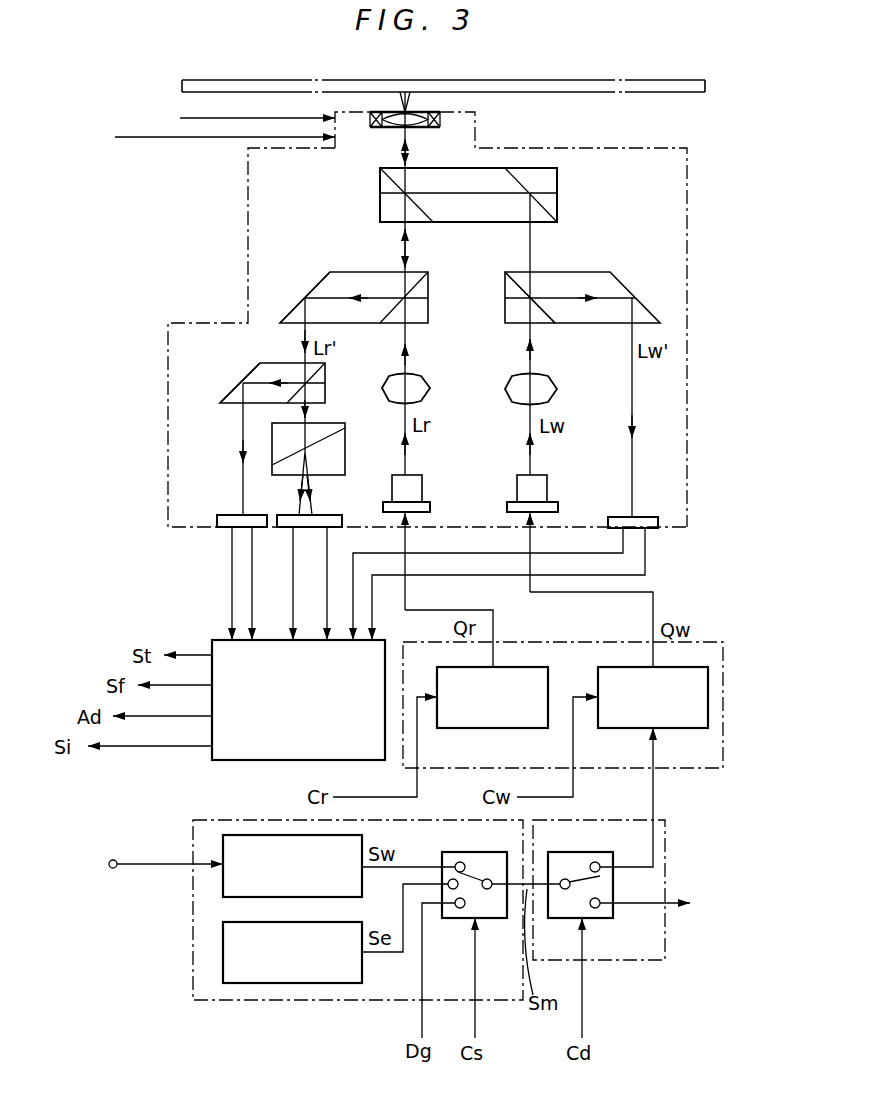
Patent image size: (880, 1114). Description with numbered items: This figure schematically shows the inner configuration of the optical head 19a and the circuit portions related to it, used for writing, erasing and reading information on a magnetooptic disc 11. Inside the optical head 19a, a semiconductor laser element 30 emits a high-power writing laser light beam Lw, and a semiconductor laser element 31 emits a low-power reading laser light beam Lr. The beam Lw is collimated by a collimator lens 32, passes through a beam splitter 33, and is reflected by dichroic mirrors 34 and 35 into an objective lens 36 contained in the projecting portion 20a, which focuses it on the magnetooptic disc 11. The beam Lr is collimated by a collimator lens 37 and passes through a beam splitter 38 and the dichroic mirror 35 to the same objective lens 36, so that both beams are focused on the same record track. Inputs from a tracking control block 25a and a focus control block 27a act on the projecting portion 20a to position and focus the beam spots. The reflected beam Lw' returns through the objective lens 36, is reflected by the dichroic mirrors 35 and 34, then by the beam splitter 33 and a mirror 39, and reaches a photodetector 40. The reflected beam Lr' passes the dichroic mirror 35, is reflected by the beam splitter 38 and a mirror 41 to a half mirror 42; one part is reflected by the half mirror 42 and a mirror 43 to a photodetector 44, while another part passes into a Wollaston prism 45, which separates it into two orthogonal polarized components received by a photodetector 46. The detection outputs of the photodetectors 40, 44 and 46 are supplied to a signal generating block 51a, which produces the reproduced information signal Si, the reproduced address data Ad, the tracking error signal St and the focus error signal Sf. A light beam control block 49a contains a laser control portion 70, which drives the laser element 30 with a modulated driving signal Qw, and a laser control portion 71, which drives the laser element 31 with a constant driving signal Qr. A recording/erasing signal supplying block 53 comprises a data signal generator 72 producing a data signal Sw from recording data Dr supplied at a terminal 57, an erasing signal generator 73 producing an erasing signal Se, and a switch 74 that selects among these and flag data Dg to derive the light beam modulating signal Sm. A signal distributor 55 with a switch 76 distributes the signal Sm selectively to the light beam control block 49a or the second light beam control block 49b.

The magnetooptic disc 11 is at (220, 80).
The focus control block 27a is at (226, 117).
The tracking control block 25a is at (196, 140).
The projecting portion 20a is at (476, 120).
The optical head 19a is at (165, 358).
The objective lens 36 is at (380, 128).
The dichroic mirror 34 is at (548, 203).
The dichroic mirror 35 is at (397, 190).
The beam splitter 38 is at (427, 287).
The mirror 41 is at (330, 275).
The mirror 39 is at (618, 283).
The beam splitter 33 is at (522, 292).
The half mirror 42 is at (322, 387).
The mirror 43 is at (255, 365).
The collimator lens 37 is at (418, 372).
The collimator lens 32 is at (512, 373).
The Wollaston prism 45 is at (348, 446).
The photodetector 44 is at (222, 513).
The photodetector 46 is at (337, 514).
The photodetector 40 is at (648, 517).
The semiconductor laser element 31 is at (418, 487).
The semiconductor laser element 30 is at (522, 488).
The signal generating block 51a is at (217, 638).
The light beam control block 49a is at (522, 642).
The laser control portion 71 is at (505, 730).
The laser control portion 70 is at (672, 730).
The recording/erasing signal supplying block 53 is at (267, 820).
The data signal generator 72 is at (364, 880).
The erasing signal generator 73 is at (365, 968).
The terminal 57 is at (113, 868).
The switch 74 is at (453, 918).
The switch 76 is at (612, 906).
The signal distributor 55 is at (654, 960).
The light beam control block 49b is at (673, 904).